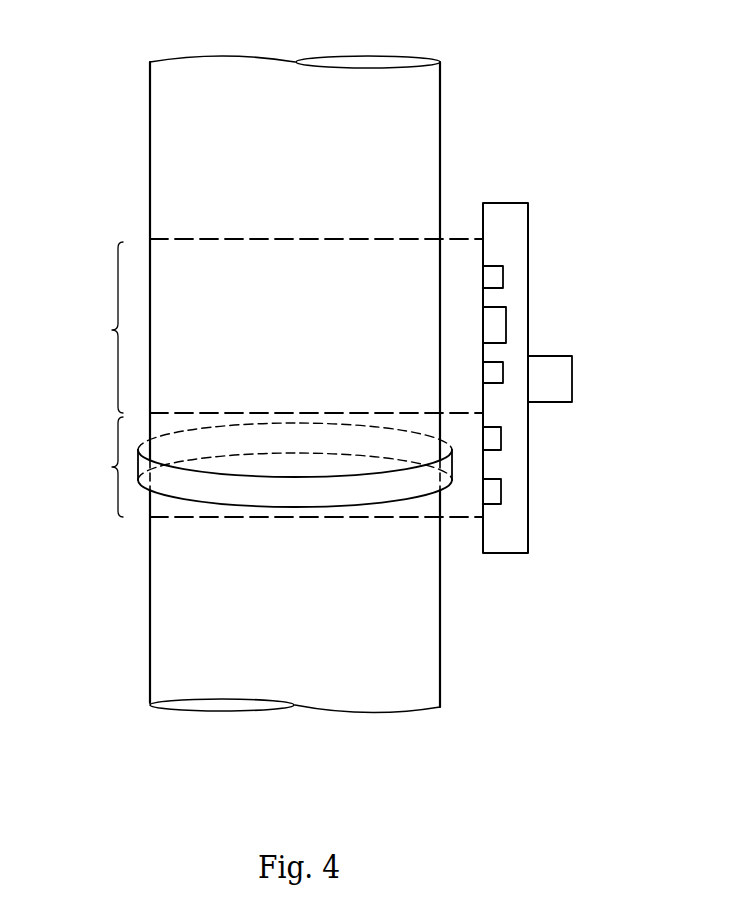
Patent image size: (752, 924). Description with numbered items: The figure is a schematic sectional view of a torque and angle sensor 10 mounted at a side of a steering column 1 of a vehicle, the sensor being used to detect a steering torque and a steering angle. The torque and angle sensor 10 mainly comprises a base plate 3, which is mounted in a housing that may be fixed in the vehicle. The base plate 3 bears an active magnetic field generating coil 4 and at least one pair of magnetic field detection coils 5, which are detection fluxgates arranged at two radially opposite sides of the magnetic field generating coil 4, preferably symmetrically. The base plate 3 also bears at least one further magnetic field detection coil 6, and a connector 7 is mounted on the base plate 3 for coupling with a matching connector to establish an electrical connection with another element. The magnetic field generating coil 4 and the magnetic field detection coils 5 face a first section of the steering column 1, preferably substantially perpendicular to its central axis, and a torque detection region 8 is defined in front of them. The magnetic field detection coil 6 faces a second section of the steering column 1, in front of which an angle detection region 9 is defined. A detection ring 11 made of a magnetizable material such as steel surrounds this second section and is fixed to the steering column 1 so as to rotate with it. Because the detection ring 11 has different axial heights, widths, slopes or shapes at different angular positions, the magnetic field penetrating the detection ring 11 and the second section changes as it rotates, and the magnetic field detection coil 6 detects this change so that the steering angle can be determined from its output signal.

The steering column 1 is at (148, 150).
The base plate 3 is at (523, 429).
The active magnetic field generating coil 4 is at (503, 325).
The magnetic field detection coils 5 is at (500, 276).
The magnetic field detection coil 6 is at (497, 443).
The connector 7 is at (563, 387).
The torque detection region 8 is at (107, 327).
The angle detection region 9 is at (107, 467).
The torque and angle sensor 10 is at (556, 343).
The detection ring 11 is at (294, 499).